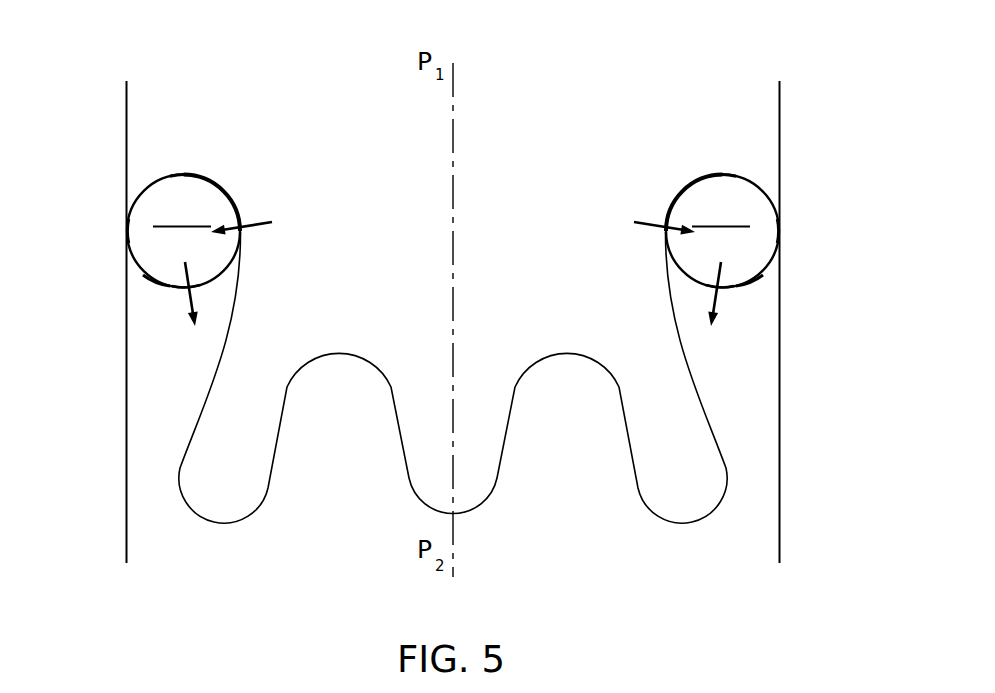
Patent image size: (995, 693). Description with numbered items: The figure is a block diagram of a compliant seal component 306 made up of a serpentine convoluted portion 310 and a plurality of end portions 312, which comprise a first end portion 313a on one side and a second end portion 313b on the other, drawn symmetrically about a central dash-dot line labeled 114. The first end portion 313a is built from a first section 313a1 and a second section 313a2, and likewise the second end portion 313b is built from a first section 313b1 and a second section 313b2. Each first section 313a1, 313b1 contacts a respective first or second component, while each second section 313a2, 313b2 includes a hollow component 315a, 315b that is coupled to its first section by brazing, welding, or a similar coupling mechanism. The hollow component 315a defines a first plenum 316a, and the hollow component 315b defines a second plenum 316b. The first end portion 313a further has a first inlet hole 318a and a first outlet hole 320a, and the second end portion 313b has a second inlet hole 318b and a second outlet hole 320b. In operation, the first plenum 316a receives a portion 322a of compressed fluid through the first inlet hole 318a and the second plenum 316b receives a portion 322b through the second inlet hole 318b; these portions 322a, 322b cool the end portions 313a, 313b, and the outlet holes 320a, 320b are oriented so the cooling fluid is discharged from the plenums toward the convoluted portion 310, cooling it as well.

The compliant seal component 306 is at (667, 55).
The central plane 114 is at (489, 123).
The convoluted portion 310 is at (406, 512).
The end portions 312 is at (140, 181).
The first end portion 313a is at (219, 186).
The first section of the first end portion 313a1 is at (195, 175).
The second section of the first end portion 313a2 is at (149, 281).
The second end portion 313b is at (686, 185).
The first section of the second end portion 313b1 is at (711, 175).
The second section of the second end portion 313b2 is at (757, 281).
The hollow component 315a is at (128, 247).
The hollow component 315b is at (778, 247).
The first plenum 316a is at (182, 213).
The second plenum 316b is at (721, 213).
The first inlet hole 318a is at (240, 223).
The second inlet hole 318b is at (666, 223).
The first outlet hole 320a is at (190, 287).
The second outlet hole 320b is at (716, 287).
The portion of compressed fluid 322a is at (264, 227).
The portion of compressed fluid 322b is at (644, 227).